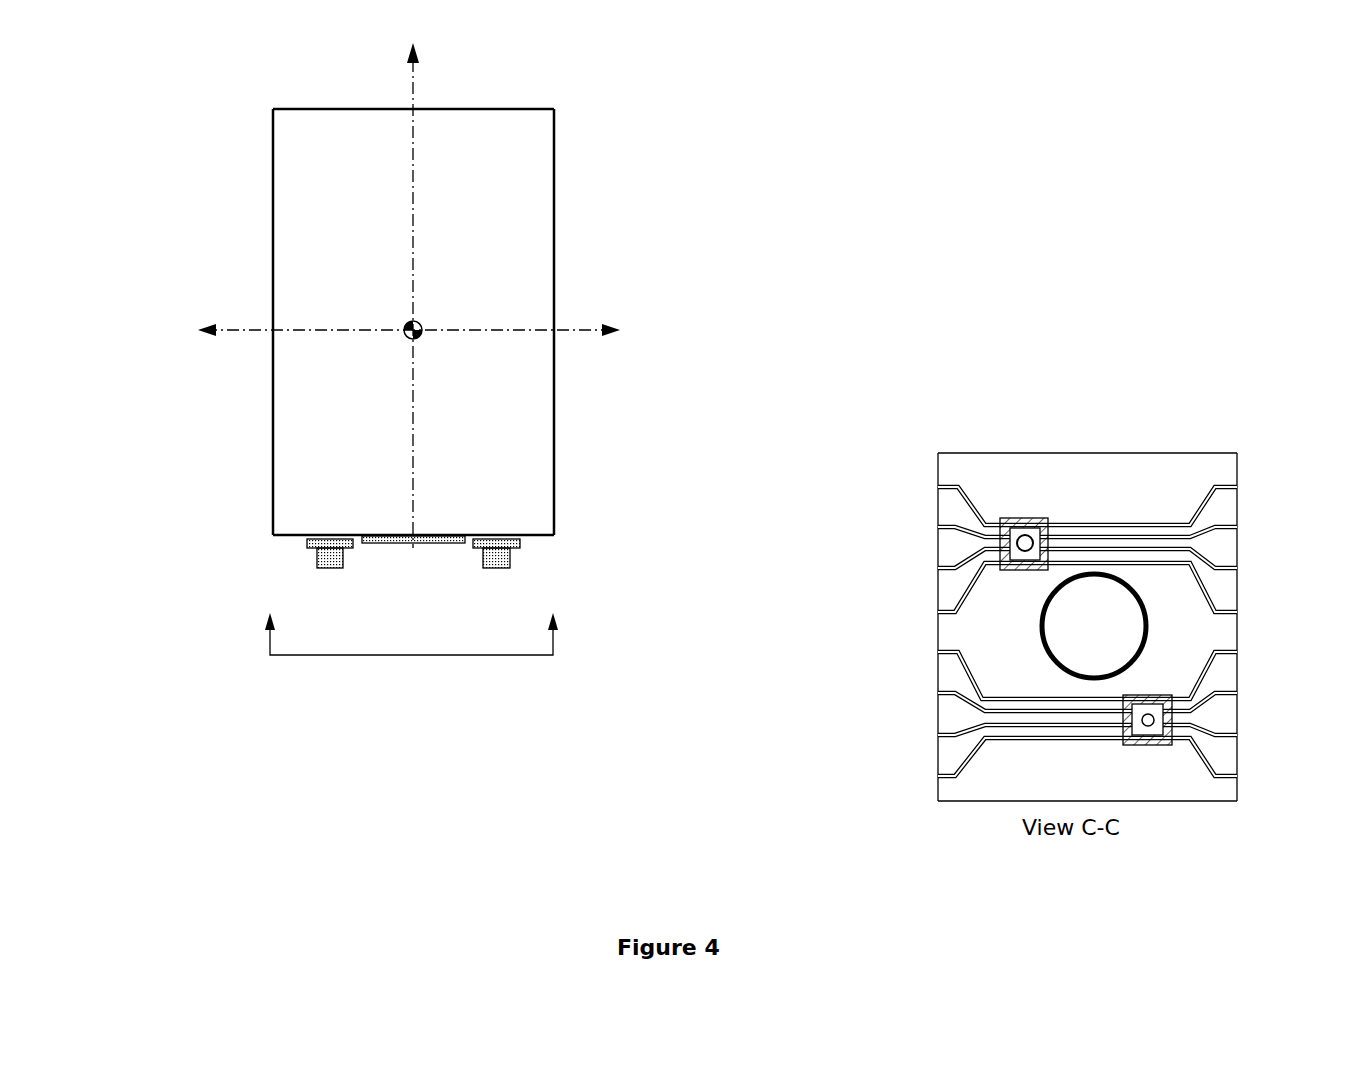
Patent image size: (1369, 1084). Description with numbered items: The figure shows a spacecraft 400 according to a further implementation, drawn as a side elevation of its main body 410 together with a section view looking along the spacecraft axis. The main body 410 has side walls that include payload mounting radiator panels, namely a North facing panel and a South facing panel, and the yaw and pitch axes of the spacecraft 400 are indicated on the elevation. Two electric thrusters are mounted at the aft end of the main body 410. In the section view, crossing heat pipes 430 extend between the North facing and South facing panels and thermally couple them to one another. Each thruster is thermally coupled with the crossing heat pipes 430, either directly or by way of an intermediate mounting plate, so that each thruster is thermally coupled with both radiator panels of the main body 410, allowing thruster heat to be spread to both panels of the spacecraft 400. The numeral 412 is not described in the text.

The spacecraft 400 is at (173, 89).
The main body 410 is at (537, 263).
The bottom side 412 is at (533, 527).
The crossing heat pipes 430 is at (1136, 528).